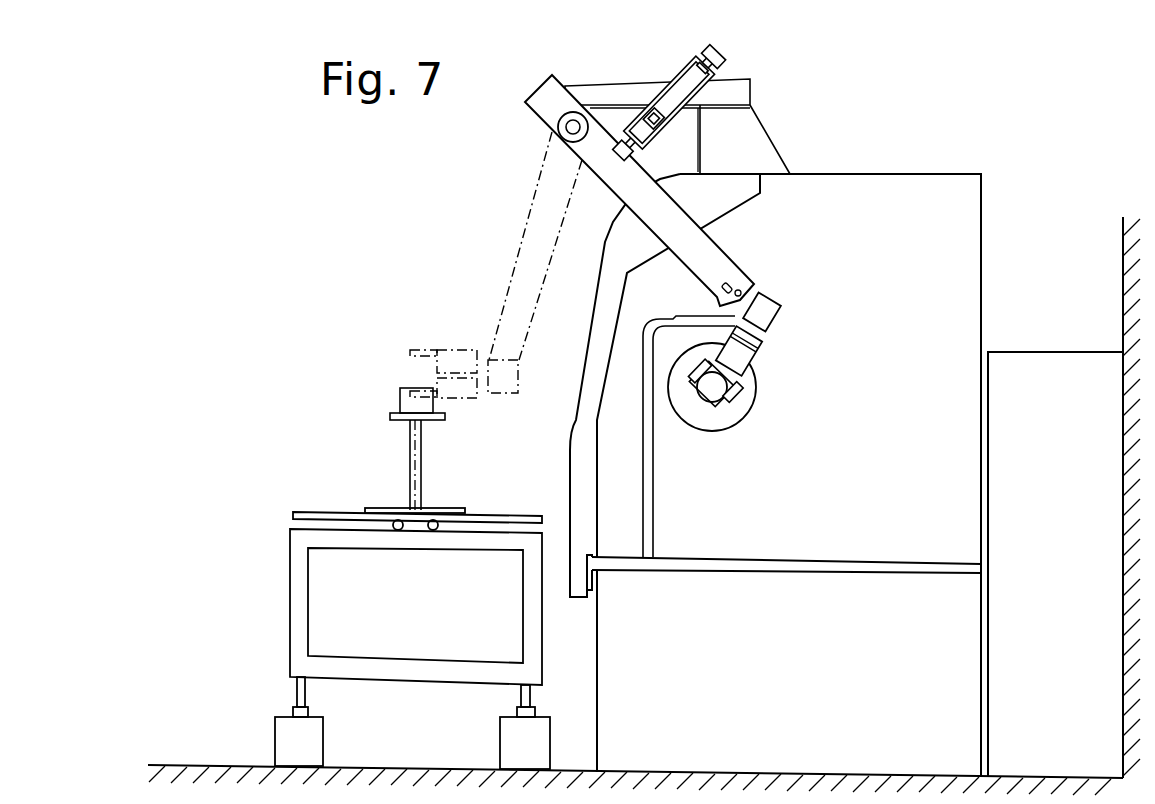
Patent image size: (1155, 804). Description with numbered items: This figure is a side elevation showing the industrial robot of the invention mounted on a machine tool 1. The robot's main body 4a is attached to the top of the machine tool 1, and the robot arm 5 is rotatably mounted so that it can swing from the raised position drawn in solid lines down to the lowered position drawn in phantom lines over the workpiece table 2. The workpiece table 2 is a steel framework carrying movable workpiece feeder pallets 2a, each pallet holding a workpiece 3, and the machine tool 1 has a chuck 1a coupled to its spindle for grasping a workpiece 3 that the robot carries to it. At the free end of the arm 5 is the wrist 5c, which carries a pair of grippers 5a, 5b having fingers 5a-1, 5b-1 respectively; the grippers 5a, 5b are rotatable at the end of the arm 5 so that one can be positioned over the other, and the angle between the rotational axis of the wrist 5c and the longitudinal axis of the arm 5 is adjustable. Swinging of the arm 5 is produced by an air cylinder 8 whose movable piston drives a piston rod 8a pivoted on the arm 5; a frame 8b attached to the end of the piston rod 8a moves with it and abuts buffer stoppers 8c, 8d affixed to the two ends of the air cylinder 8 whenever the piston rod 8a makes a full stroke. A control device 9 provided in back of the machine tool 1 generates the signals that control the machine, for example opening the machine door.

The machine tool 1 is at (907, 197).
The chuck 1a is at (748, 398).
The workpiece table 2 is at (275, 578).
The workpiece feeder pallet 2a is at (393, 420).
The workpiece 3 is at (710, 398).
The main body 4a is at (767, 148).
The robot arm 5 is at (542, 100).
The gripper 5a is at (747, 357).
The fingers 5a-1 is at (417, 350).
The gripper 5b is at (470, 378).
The fingers 5b-1 is at (421, 392).
The wrist 5c is at (780, 303).
The air cylinder 8 is at (672, 88).
The piston rod 8a is at (690, 130).
The frame 8b is at (703, 92).
The buffer stopper 8c is at (650, 108).
The buffer stopper 8d is at (723, 60).
The control device 9 is at (1053, 360).